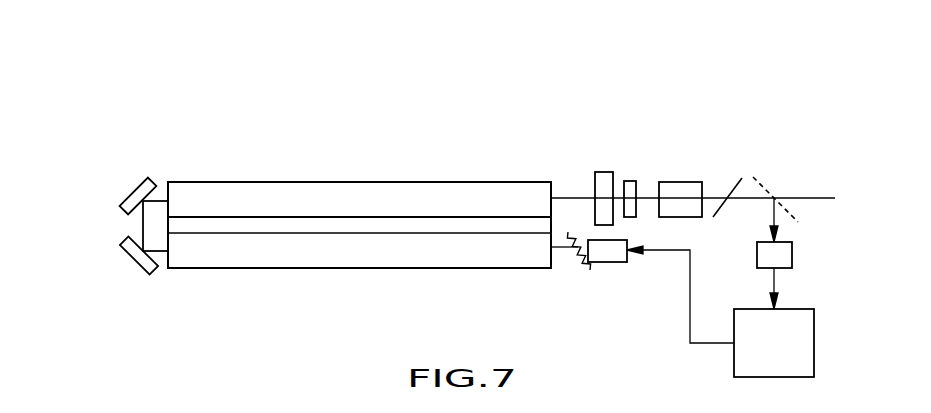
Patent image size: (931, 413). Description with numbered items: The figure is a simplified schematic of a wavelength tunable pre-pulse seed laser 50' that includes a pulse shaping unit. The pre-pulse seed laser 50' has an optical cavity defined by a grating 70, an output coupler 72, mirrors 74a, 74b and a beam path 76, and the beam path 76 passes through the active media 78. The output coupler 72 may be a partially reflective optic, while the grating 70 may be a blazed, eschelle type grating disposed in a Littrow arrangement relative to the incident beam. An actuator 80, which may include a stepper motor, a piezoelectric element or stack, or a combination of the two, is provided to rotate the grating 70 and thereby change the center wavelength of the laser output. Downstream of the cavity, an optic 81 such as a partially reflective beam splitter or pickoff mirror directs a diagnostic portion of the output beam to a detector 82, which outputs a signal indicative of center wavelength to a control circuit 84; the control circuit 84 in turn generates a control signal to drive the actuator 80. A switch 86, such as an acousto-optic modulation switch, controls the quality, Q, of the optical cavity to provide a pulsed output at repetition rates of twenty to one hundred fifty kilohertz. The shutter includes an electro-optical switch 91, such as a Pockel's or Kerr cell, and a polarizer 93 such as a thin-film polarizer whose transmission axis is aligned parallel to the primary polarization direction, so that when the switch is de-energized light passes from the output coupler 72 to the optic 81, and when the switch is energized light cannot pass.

The wavelength tunable pre-pulse seed laser 50' is at (195, 81).
The grating 70 is at (590, 268).
The output coupler 72 is at (630, 181).
The mirror 74a is at (131, 194).
The mirror 74b is at (131, 259).
The beam path 76 is at (143, 226).
The active media 78 is at (420, 182).
The actuator 80 is at (607, 262).
The optic 81 is at (765, 180).
The detector 82 is at (792, 255).
The control circuit 84 is at (788, 355).
The switch 86 is at (605, 172).
The electro-optical switch 91 is at (681, 182).
The polarizer 93 is at (727, 188).